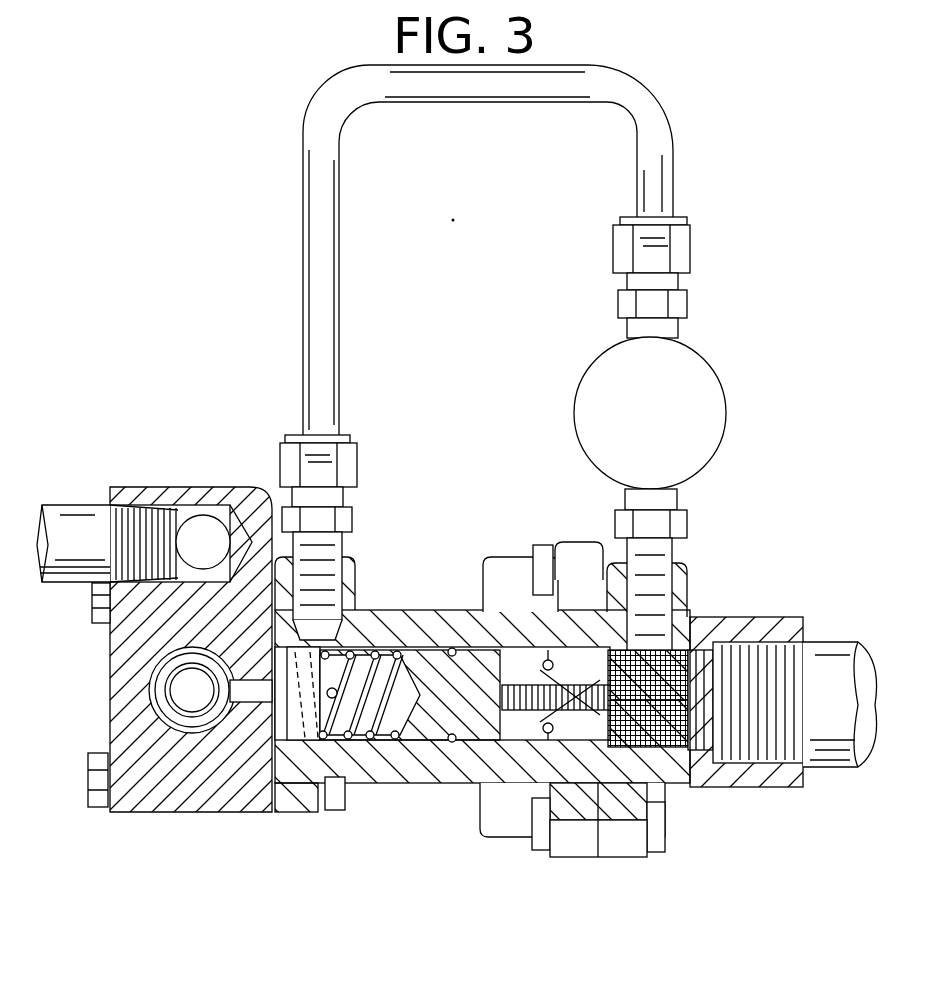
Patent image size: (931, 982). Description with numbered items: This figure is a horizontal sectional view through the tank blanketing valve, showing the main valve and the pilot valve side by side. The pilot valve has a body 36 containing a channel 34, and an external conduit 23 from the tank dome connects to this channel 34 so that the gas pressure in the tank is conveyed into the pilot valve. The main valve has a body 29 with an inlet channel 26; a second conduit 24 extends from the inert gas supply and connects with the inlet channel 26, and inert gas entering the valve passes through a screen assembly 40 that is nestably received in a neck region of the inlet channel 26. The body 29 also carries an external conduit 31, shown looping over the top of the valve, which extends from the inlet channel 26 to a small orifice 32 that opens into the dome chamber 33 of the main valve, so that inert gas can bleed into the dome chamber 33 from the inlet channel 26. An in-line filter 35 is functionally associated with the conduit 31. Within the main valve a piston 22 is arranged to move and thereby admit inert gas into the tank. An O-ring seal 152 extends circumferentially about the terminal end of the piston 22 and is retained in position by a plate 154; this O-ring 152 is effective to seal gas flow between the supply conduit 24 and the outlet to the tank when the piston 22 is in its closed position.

The piston 22 is at (420, 735).
The conduit 23 is at (83, 515).
The second conduit 24 is at (825, 742).
The inlet channel 26 is at (773, 645).
The body 29 is at (440, 610).
The external conduit 31 is at (668, 170).
The orifice 32 is at (320, 637).
The dome chamber 33 is at (360, 780).
The channel 34 is at (207, 535).
The in-line filter 35 is at (725, 390).
The body 36 is at (112, 640).
The screen assembly 40 is at (690, 617).
The O-ring seal 152 is at (515, 800).
The plate 154 is at (560, 720).